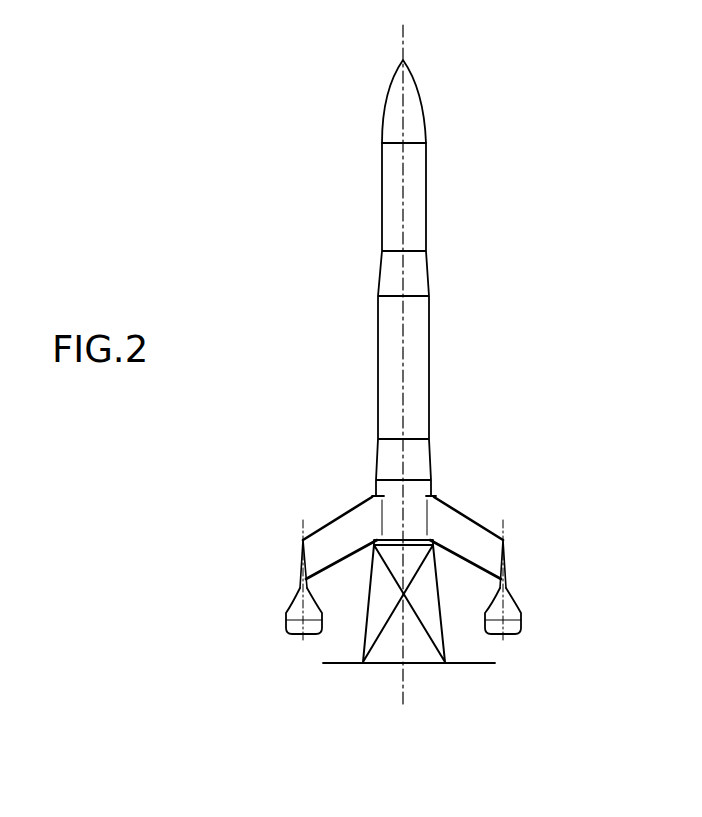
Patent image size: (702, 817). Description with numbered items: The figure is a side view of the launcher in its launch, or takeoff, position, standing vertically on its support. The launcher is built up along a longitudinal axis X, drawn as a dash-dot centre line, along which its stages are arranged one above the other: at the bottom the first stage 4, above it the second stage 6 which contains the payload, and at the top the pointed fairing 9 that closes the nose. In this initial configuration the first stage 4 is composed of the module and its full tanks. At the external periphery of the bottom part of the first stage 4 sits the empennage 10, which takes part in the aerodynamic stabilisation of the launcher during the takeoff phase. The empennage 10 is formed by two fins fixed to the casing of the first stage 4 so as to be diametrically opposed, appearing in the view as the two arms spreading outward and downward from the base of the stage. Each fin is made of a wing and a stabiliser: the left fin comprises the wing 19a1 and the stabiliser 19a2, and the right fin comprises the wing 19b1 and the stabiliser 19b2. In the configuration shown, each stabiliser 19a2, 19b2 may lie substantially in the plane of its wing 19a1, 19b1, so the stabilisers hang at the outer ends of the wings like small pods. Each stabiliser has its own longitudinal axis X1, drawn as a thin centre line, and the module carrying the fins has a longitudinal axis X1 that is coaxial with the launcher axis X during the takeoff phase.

The longitudinal axis X is at (403, 37).
The longitudinal axis of the module X1 is at (303, 641).
The first stage 4 is at (336, 417).
The second stage 6 is at (430, 308).
The fairing 9 is at (422, 100).
The empennage 10 is at (521, 552).
The wing 19a1 is at (347, 525).
The wing 19b1 is at (458, 525).
The stabiliser 19a2 is at (285, 624).
The stabiliser 19b2 is at (512, 617).